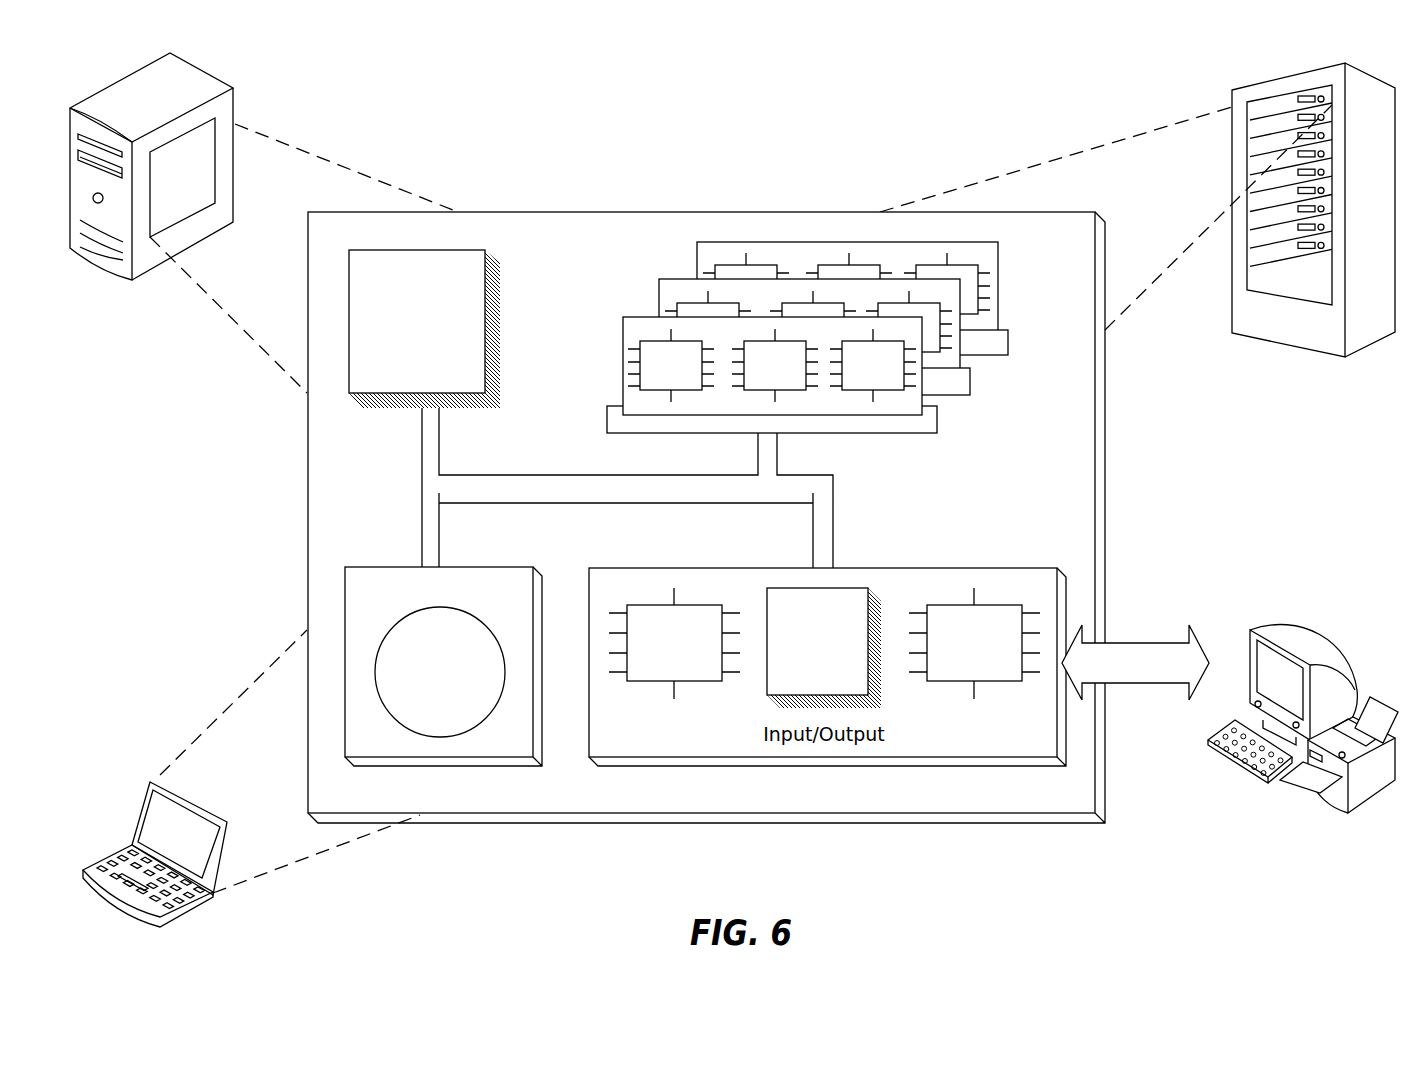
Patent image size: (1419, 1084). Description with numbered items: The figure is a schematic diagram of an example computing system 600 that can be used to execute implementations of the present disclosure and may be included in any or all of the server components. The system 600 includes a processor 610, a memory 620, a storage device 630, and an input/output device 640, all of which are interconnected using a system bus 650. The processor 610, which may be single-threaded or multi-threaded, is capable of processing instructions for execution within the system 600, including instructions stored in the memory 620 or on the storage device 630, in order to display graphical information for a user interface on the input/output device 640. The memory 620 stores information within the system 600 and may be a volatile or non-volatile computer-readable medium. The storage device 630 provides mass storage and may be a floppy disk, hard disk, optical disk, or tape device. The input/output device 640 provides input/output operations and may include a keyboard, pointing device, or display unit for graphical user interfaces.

The computing system 600 is at (521, 131).
The processor 610 is at (477, 387).
The memory 620 is at (1004, 392).
The storage device 630 is at (523, 747).
The input/output device 640 is at (1247, 636).
The system bus 650 is at (622, 493).